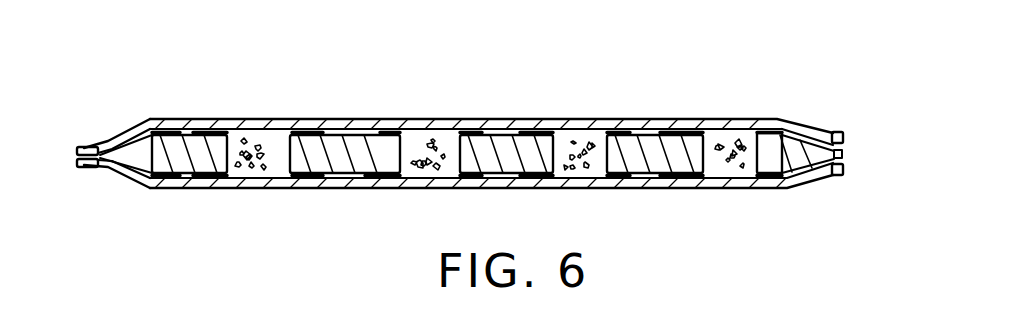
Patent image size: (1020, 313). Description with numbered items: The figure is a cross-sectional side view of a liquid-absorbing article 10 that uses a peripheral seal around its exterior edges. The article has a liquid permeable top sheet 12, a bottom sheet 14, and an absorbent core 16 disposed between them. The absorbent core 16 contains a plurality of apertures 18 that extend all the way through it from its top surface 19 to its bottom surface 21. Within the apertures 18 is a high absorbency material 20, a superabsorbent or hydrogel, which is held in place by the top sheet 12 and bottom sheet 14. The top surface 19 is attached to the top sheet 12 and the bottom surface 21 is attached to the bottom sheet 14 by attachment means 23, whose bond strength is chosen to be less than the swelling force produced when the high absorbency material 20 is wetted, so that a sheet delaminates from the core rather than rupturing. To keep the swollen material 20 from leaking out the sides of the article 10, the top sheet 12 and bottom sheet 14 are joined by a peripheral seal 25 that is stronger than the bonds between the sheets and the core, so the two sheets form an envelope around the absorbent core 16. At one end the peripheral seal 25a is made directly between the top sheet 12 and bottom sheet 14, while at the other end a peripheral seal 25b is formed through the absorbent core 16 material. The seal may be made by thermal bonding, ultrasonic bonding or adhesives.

The liquid-absorbing article 10 is at (735, 68).
The top sheet 12 is at (772, 118).
The bottom sheet 14 is at (742, 190).
The absorbent core 16 is at (505, 122).
The apertures 18 is at (443, 153).
The top surface 19 is at (338, 124).
The high absorbency material 20 is at (256, 168).
The bottom surface 21 is at (668, 170).
The attachment means 23 is at (310, 126).
The peripheral seal 25 is at (118, 103).
The peripheral seal directly between top sheet and bottom sheet 25a is at (82, 164).
The peripheral seal through absorbent core material 25b is at (843, 157).